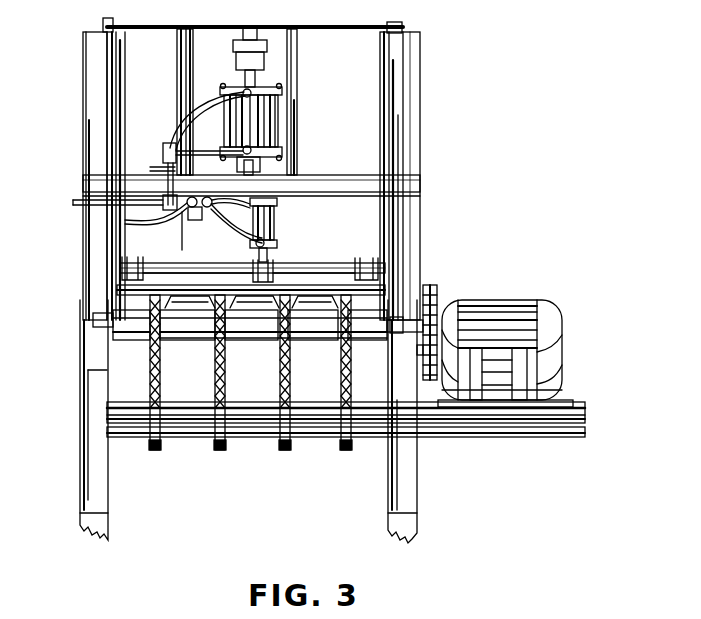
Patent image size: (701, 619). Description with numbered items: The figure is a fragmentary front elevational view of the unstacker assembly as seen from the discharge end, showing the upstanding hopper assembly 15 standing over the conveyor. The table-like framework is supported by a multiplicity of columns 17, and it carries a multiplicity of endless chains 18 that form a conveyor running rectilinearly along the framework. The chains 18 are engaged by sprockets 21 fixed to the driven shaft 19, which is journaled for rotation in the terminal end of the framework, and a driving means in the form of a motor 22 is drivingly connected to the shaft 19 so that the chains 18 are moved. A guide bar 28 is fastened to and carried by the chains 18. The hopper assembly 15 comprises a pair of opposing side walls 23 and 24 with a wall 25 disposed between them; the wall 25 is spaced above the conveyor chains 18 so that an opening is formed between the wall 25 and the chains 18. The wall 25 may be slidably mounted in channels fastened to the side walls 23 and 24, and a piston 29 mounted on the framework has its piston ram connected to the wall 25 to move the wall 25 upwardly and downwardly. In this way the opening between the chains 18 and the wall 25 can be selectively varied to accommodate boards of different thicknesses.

The hopper assembly 15 is at (325, 164).
The columns 17 is at (108, 497).
The endless chains 18 is at (160, 445).
The driven shaft 19 is at (133, 347).
The sprockets 21 is at (184, 343).
The motor 22 is at (562, 358).
The side wall 23 is at (110, 83).
The side wall 24 is at (390, 100).
The wall 25 is at (122, 43).
The guide bar 28 is at (383, 287).
The piston 29 is at (282, 115).